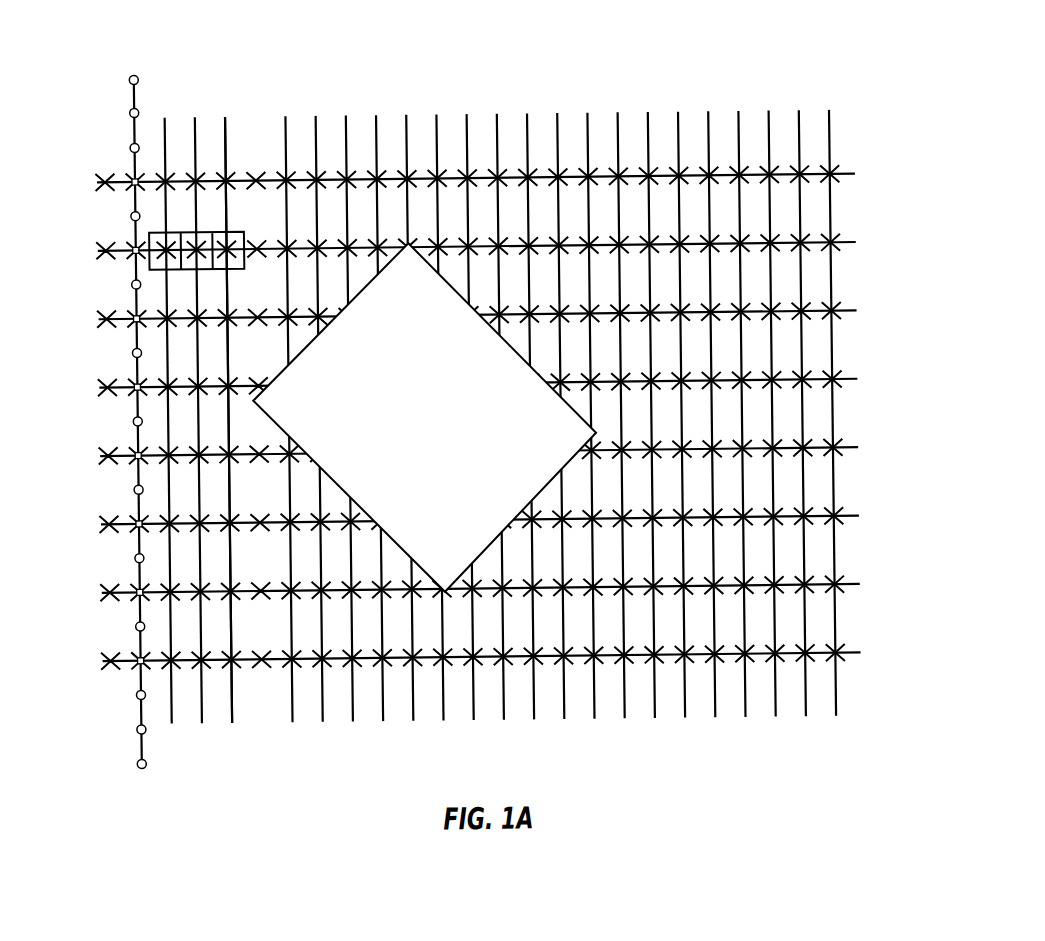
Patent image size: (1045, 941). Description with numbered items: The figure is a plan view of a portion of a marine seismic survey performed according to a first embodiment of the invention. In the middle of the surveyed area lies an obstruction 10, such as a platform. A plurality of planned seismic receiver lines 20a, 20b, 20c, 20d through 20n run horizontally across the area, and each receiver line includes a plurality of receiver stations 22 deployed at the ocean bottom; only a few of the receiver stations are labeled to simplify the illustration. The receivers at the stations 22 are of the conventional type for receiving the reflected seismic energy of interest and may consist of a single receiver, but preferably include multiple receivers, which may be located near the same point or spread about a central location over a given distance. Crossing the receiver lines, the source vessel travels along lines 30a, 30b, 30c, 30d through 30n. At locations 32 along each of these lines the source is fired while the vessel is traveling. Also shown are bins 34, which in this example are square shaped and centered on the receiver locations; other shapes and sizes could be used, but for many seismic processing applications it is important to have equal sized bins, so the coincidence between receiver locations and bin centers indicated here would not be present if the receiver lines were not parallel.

The obstruction 10 is at (438, 434).
The planned seismic receiver line 20a is at (512, 158).
The planned seismic receiver line 20b is at (512, 226).
The planned seismic receiver line 20c is at (513, 295).
The planned seismic receiver line 20d is at (515, 363).
The planned seismic receiver line 20n is at (518, 679).
The receiver stations 22 is at (842, 96).
The source vessel line 30a is at (98, 435).
The source vessel line 30b is at (134, 467).
The source vessel line 30c is at (237, 452).
The source vessel line 30d is at (289, 452).
The source vessel line 30n is at (873, 433).
The source firing locations 32 is at (94, 422).
The bins 34 is at (219, 270).